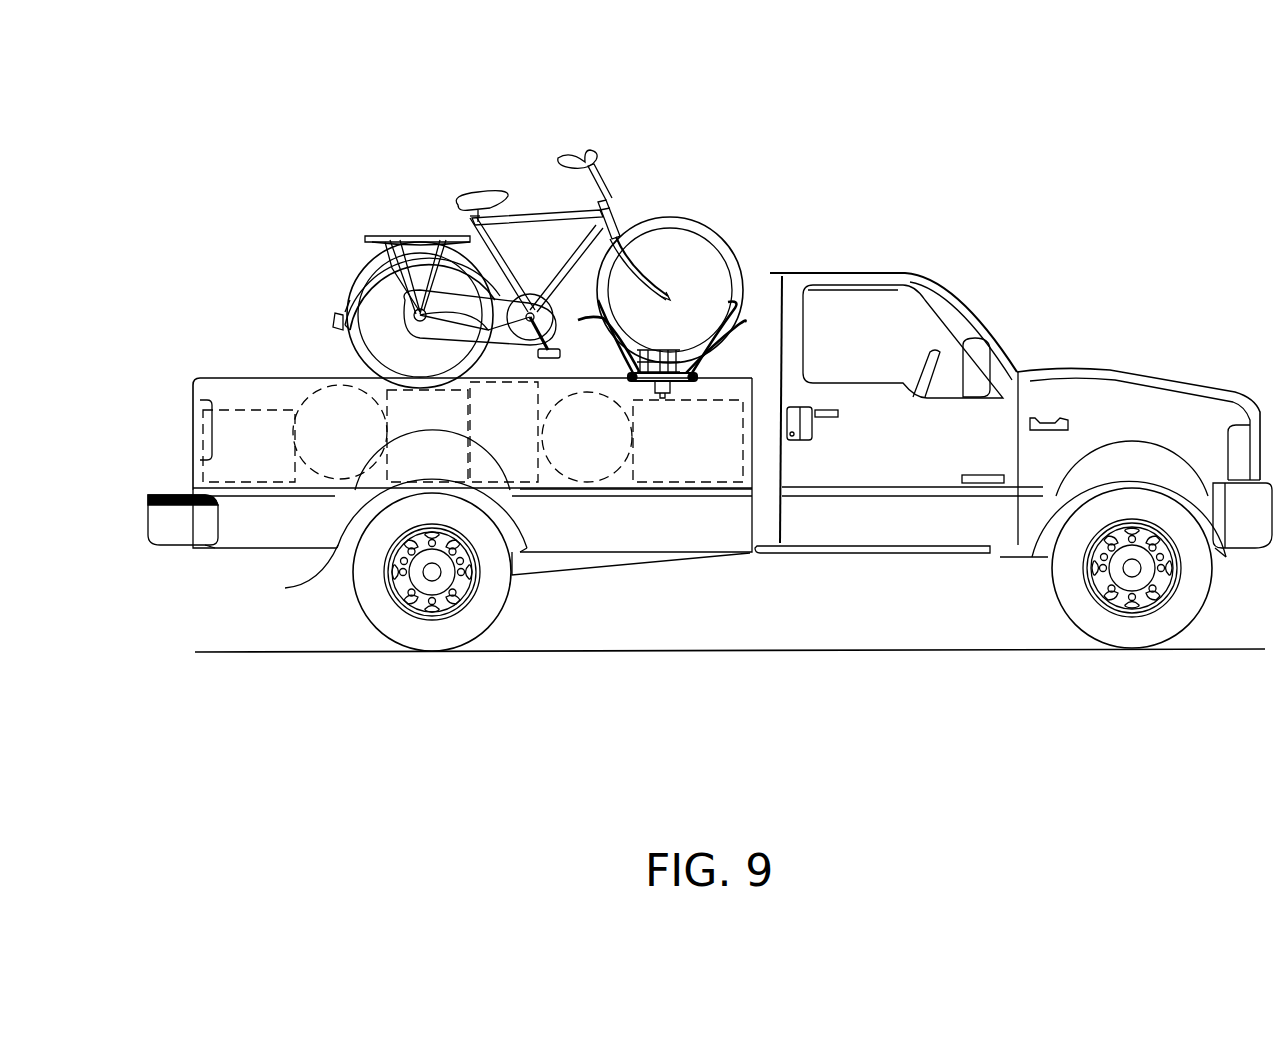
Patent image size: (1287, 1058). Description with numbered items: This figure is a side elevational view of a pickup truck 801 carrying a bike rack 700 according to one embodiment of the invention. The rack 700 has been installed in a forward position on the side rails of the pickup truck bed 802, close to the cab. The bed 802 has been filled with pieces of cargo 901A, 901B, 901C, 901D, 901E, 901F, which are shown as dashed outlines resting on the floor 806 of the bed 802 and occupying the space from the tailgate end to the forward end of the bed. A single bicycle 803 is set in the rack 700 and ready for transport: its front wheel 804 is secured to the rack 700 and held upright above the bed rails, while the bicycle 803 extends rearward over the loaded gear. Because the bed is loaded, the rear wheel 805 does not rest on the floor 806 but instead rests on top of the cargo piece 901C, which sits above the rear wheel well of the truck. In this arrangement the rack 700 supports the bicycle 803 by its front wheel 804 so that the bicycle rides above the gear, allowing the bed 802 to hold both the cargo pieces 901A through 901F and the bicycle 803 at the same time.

The bike rack 700 is at (675, 400).
The vehicle (pickup truck) 801 is at (1030, 250).
The pickup truck bed 802 is at (240, 366).
The bicycle 803 is at (415, 192).
The front wheel 804 is at (705, 232).
The rear wheel 805 is at (352, 336).
The floor 806 is at (609, 495).
The cargo piece 901A is at (249, 446).
The cargo piece 901B is at (340, 432).
The cargo piece 901C is at (427, 436).
The cargo piece 901D is at (504, 432).
The cargo piece 901E is at (587, 437).
The cargo piece 901F is at (688, 441).